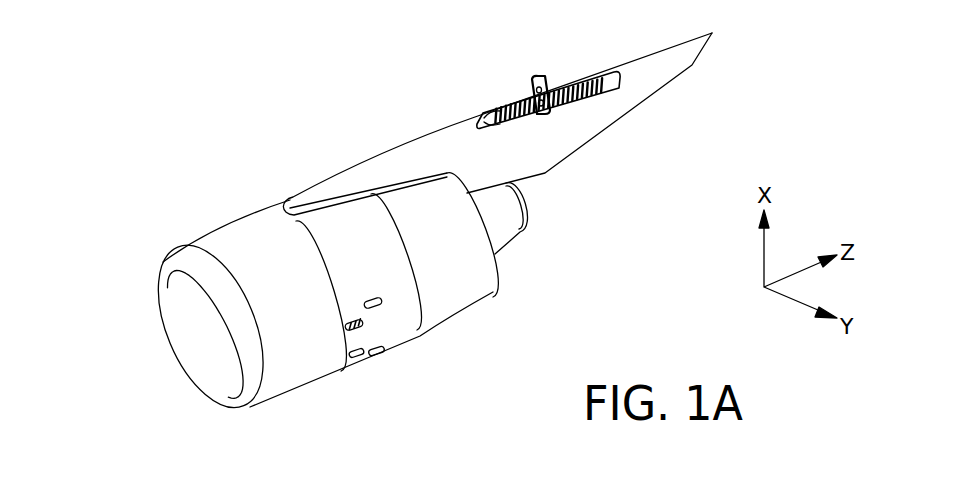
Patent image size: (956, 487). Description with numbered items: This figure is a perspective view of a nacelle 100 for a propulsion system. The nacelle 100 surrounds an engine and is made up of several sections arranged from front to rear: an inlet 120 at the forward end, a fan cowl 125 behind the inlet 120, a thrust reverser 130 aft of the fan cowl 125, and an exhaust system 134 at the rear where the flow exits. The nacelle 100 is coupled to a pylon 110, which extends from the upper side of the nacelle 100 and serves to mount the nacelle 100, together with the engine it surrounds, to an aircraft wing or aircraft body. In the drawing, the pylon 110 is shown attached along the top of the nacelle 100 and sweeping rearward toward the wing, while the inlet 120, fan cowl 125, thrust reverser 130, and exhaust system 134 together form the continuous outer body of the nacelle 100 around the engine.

The nacelle 100 is at (170, 178).
The pylon 110 is at (598, 115).
The inlet 120 is at (315, 373).
The fan cowl 125 is at (403, 330).
The thrust reverser 130 is at (473, 273).
The exhaust system 134 is at (515, 228).